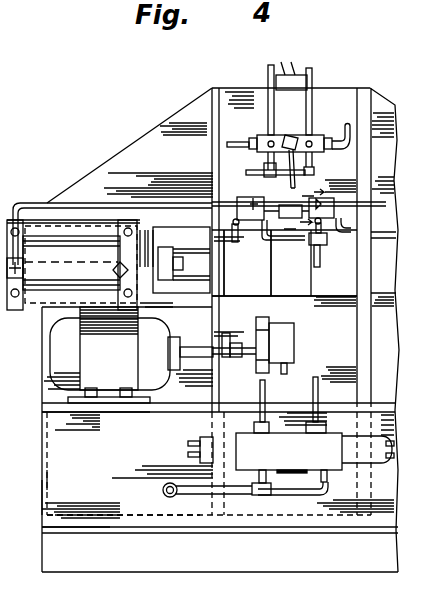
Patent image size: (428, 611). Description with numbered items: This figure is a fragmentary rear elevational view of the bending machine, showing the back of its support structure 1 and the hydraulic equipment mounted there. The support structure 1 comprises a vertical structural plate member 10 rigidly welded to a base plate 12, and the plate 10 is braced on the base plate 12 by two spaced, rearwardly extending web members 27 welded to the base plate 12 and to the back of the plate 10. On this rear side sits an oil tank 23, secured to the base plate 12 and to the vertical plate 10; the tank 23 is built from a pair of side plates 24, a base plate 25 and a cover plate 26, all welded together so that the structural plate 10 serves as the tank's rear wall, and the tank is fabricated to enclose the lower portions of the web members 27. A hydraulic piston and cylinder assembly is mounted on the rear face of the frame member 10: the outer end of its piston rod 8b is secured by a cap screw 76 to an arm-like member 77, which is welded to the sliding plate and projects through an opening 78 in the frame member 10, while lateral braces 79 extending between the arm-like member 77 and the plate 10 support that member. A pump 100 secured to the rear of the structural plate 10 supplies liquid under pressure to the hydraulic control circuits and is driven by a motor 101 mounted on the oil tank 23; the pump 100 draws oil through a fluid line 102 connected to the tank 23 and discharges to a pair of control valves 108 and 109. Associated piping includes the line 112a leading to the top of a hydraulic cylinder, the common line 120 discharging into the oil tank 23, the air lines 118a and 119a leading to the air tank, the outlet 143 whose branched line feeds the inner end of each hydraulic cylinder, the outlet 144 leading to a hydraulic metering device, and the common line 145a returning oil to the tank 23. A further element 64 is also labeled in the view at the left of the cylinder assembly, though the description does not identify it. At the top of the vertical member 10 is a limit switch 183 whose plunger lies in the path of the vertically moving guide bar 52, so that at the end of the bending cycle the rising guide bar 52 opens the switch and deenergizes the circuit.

The support structure 1 is at (91, 578).
The vertical structural plate member 10 is at (167, 126).
The base plate 12 is at (42, 529).
The oil tank 23 is at (37, 498).
The side plates 24 is at (47, 473).
The base plate 25 is at (122, 511).
The cover plate 26 is at (76, 407).
The web members 27 is at (376, 88).
The guide bar 52 is at (280, 280).
The hydraulic cylinder 64 is at (32, 310).
The cap screw 76 is at (183, 266).
The arm-like member 77 is at (171, 251).
The opening 78 is at (246, 300).
The lateral braces 79 is at (206, 246).
The piston rod 8b is at (160, 238).
The pump 100 is at (283, 330).
The motor 101 is at (60, 354).
The fluid line 102 is at (294, 373).
The control valve 108 is at (267, 137).
The control valve 109 is at (36, 428).
The line 112a is at (313, 77).
The air line 118a is at (227, 146).
The air line 119a is at (326, 160).
The common line 120 is at (265, 178).
The outlet 143 is at (313, 390).
The outlet 144 is at (262, 393).
The common line 145a is at (238, 495).
The limit switch 183 is at (287, 77).